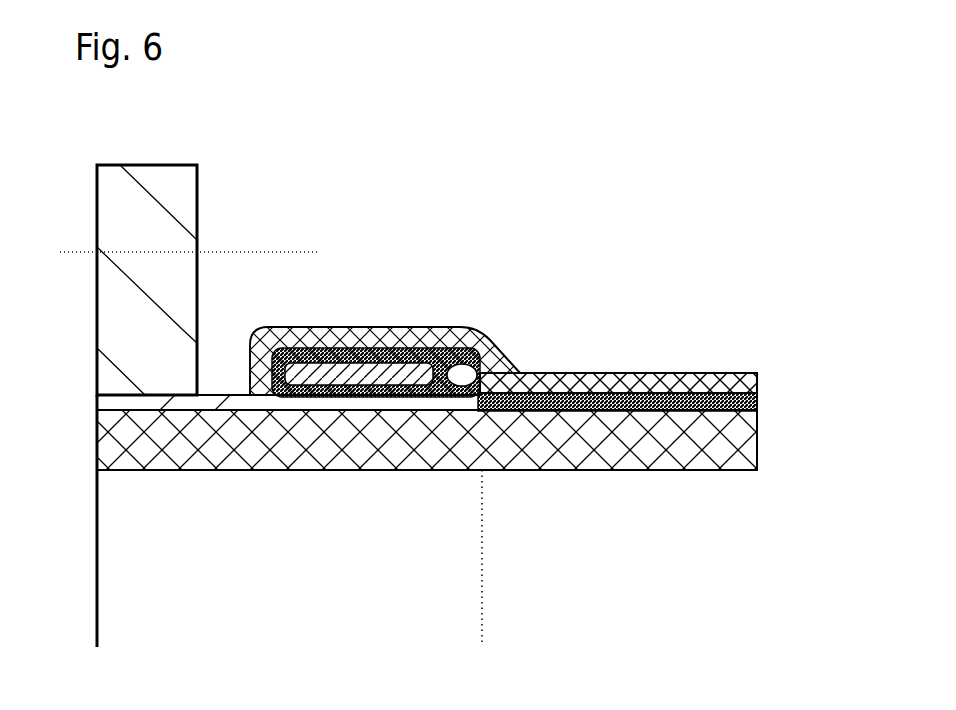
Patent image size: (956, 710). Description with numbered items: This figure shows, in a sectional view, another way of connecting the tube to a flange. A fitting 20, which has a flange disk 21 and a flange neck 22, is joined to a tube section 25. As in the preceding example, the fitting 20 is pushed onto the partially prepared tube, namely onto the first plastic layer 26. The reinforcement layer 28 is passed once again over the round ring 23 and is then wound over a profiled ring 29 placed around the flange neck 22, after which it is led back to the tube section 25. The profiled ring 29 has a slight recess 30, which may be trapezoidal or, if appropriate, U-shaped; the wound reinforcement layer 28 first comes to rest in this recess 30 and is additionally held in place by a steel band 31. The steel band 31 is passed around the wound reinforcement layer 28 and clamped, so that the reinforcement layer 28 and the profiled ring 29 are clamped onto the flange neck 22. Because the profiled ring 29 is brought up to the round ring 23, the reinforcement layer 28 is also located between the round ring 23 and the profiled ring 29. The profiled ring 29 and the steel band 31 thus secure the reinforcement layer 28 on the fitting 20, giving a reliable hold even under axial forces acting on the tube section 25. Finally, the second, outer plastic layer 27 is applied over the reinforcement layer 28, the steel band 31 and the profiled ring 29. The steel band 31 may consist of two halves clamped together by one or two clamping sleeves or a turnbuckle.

The fitting 20 is at (178, 213).
The flange disk 21 is at (113, 284).
The flange neck 22 is at (178, 410).
The round ring 23 is at (465, 360).
The tube section 25 is at (427, 468).
The first plastic layer 26 is at (546, 453).
The second, outer plastic layer 27 is at (601, 385).
The reinforcement layer 28 is at (693, 392).
The profiled ring 29 is at (359, 370).
The recess 30 is at (302, 368).
The steel band 31 is at (368, 345).